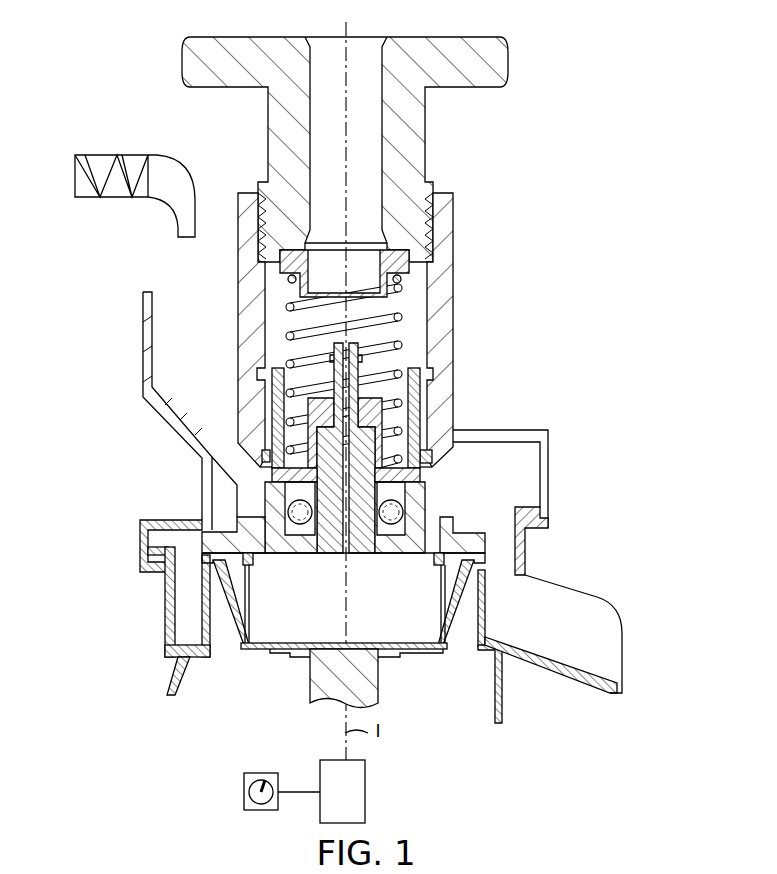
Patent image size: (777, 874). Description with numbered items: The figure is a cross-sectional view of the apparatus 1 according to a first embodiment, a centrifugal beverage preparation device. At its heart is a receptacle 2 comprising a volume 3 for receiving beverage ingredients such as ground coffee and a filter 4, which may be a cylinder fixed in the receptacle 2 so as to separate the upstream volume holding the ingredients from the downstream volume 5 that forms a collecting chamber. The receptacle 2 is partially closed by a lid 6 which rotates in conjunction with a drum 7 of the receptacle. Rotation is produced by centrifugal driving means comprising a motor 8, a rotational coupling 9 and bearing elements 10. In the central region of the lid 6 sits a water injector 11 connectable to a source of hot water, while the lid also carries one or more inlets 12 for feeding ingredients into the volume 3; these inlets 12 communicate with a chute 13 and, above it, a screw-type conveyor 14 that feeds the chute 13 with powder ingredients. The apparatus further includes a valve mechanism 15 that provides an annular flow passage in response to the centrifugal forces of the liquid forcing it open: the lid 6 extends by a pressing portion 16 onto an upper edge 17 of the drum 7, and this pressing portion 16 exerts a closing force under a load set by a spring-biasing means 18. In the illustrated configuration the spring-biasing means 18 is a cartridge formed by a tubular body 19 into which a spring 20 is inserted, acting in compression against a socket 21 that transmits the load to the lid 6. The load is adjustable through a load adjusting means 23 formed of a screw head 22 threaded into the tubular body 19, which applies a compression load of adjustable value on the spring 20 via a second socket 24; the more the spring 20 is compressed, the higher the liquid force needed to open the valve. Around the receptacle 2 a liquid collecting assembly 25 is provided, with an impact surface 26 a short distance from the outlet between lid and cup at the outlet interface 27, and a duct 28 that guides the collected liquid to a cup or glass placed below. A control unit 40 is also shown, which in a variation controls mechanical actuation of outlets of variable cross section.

The apparatus 1 is at (141, 465).
The receptacle 2 is at (343, 623).
The volume 3 is at (273, 631).
The filter 4 is at (250, 574).
The downstream volume 5 is at (242, 589).
The lid 6 is at (479, 530).
The drum 7 is at (425, 651).
The motor 8 is at (366, 771).
The rotational coupling 9 is at (310, 683).
The bearing elements 10 is at (399, 511).
The water injector 11 is at (367, 436).
The inlets 12 is at (253, 523).
The chute 13 is at (143, 302).
The screw-type conveyor 14 is at (88, 155).
The valve mechanism 15 is at (496, 543).
The pressing portion 16 is at (485, 556).
The upper edge 17 is at (200, 567).
The spring-biasing means 18 is at (465, 341).
The tubular body 19 is at (247, 272).
The spring 20 is at (402, 315).
The socket 21 is at (272, 416).
The screw head 22 is at (367, 131).
The load adjusting means 23 is at (516, 195).
The second socket 24 is at (411, 268).
The liquid collecting assembly 25 is at (162, 624).
The impact surface 26 is at (175, 564).
The outlet interface 27 is at (487, 558).
The duct 28 is at (609, 657).
The control unit 40 is at (244, 786).